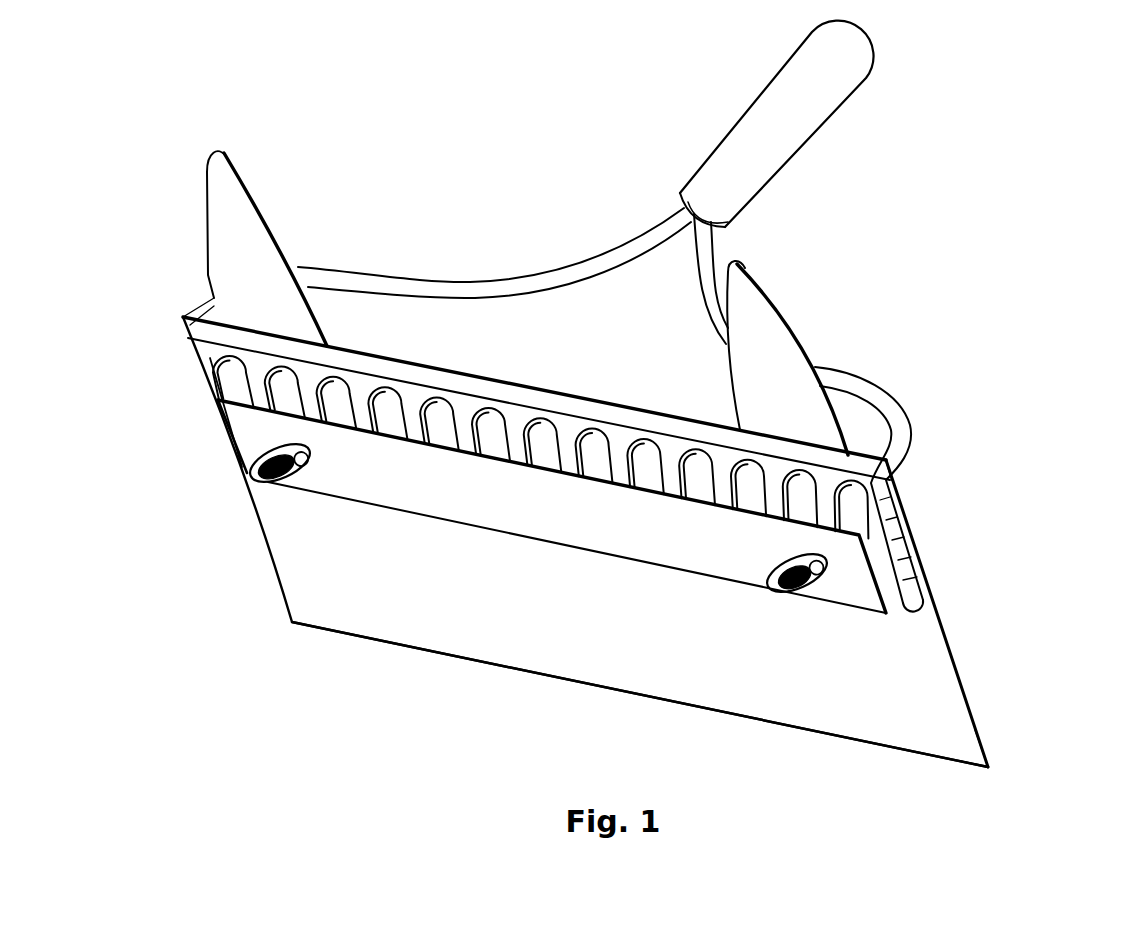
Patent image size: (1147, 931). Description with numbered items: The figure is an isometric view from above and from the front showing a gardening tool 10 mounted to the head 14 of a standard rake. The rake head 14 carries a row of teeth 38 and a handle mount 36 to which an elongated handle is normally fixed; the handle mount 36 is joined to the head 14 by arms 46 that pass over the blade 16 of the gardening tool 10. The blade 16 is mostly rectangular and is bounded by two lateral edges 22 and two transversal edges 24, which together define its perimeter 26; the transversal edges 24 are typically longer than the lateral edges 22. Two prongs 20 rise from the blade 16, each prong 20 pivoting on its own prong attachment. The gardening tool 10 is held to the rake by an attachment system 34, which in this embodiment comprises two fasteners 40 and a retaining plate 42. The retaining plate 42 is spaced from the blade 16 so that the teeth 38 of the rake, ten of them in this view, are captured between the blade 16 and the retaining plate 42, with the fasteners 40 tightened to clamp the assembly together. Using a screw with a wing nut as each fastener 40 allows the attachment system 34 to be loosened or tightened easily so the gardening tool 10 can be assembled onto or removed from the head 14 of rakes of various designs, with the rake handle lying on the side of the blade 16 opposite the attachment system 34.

The gardening tool 10 is at (995, 522).
The head 14 is at (604, 413).
The blade 16 is at (585, 542).
The prong 20 is at (527, 303).
The lateral edges 22 is at (462, 657).
The transversal edges 24 is at (966, 683).
The perimeter 26 is at (981, 767).
The attachment system 34 is at (860, 587).
The handle mount 36 is at (843, 98).
The teeth 38 is at (463, 428).
The fastener 40 is at (257, 480).
The retaining plate 42 is at (552, 506).
The arms 46 is at (497, 280).